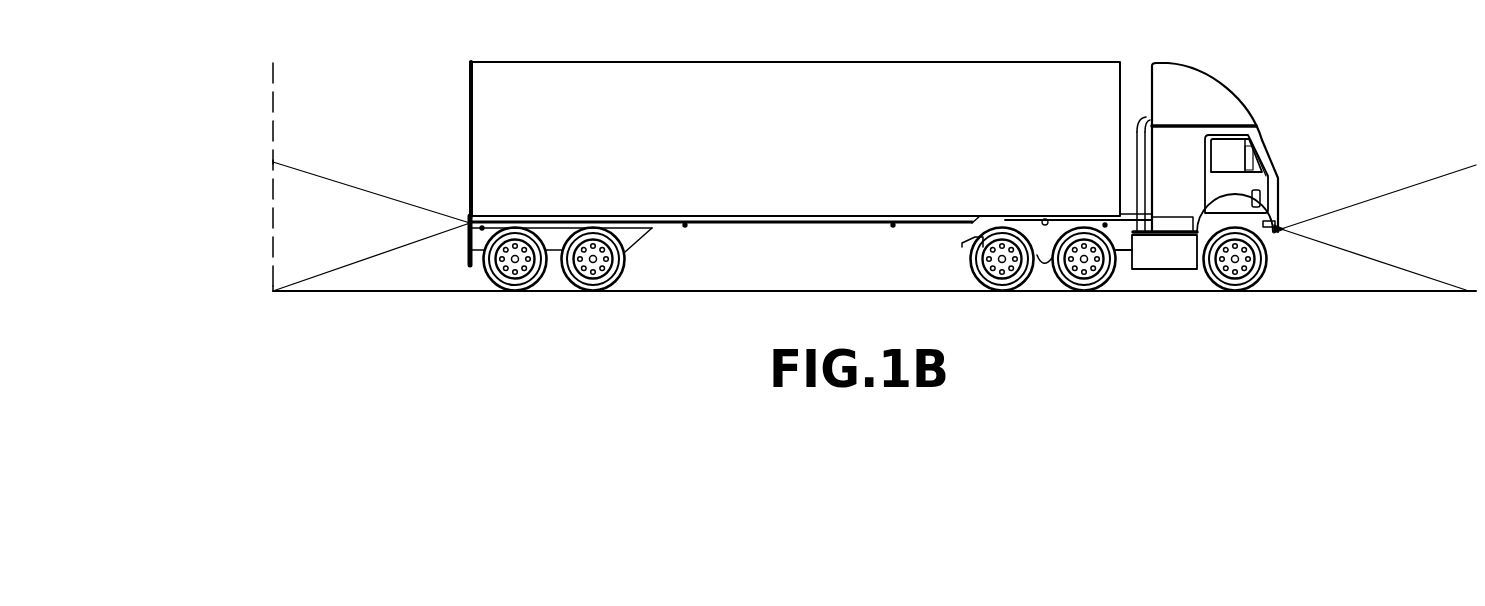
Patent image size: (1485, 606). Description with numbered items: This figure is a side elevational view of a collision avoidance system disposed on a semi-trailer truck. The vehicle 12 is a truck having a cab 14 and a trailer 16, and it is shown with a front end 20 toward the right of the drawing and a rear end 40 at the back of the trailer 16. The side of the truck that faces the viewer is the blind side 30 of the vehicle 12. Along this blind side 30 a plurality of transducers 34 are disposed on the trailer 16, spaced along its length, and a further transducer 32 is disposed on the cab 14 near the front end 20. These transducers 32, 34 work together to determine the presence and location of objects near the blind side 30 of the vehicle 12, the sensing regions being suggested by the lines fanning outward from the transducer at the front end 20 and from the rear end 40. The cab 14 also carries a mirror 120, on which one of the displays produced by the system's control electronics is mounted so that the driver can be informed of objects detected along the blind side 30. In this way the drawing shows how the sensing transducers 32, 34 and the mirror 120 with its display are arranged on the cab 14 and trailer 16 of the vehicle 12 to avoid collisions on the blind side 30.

The vehicle 12 is at (1197, 64).
The cab 14 is at (1217, 174).
The trailer 16 is at (725, 198).
The front end 20 is at (1282, 209).
The blind side 30 is at (1014, 74).
The transducer 32 is at (1282, 236).
The transducers 34 is at (482, 226).
The rear end 40 is at (469, 218).
The mirror 120 is at (1256, 163).